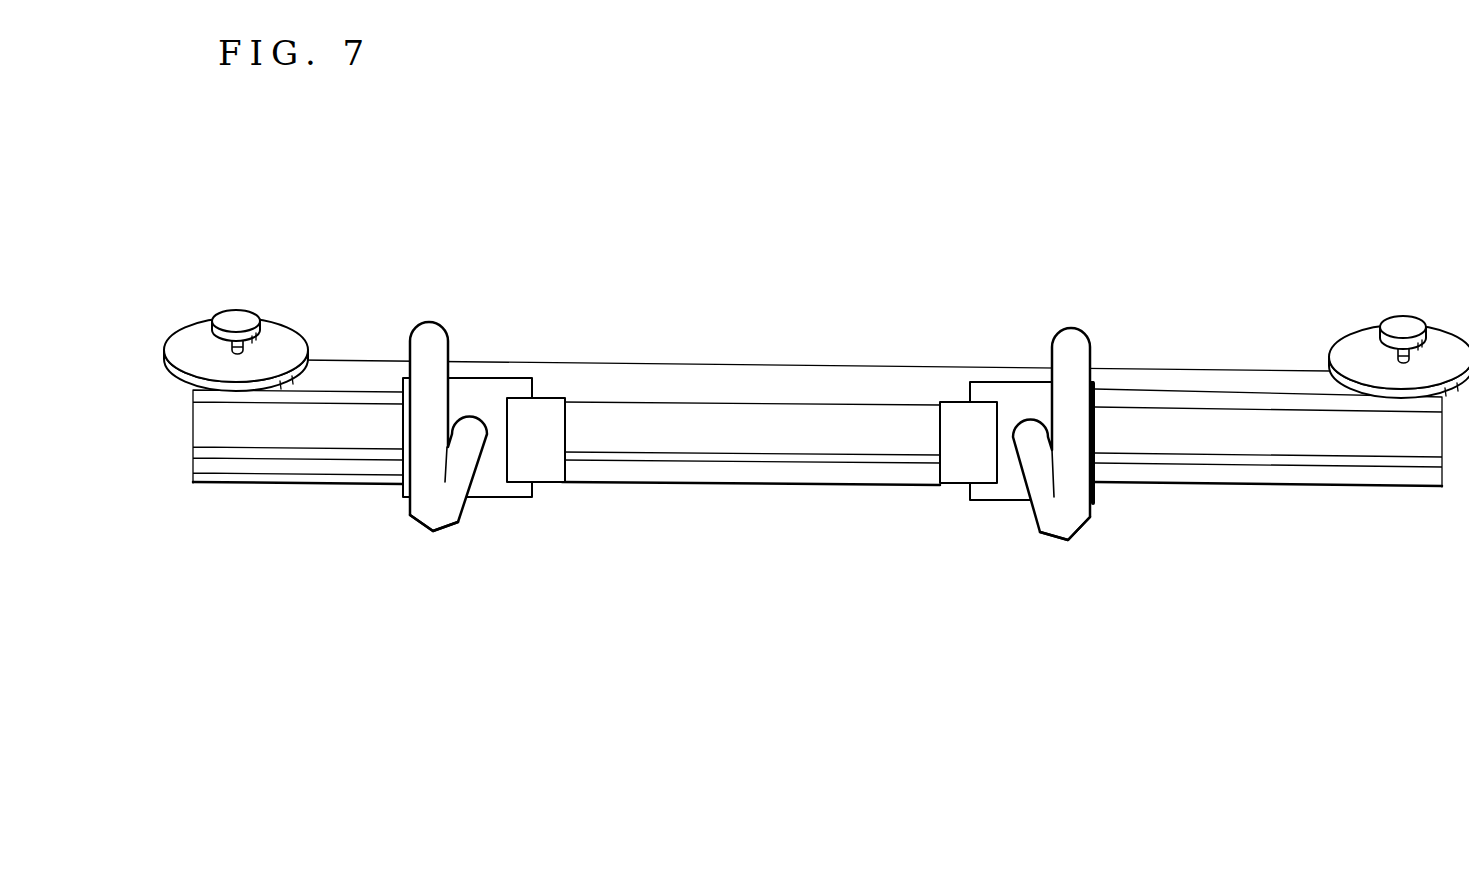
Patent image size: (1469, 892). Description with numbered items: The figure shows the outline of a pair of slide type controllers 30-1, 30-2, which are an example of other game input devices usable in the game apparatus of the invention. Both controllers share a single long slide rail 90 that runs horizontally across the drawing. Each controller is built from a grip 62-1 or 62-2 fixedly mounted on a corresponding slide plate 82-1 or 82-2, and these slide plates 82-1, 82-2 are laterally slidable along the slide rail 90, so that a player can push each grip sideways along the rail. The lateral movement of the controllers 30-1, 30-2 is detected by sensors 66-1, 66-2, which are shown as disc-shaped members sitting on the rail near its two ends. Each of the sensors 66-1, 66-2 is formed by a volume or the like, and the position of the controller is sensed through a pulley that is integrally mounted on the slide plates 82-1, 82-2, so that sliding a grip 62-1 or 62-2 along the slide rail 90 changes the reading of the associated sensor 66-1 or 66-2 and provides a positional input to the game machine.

The slide rail 90 is at (245, 482).
The sensor 66-1 is at (258, 320).
The sensor 66-2 is at (1403, 320).
The grip 62-1 is at (432, 338).
The grip 62-2 is at (1072, 340).
The slide plate 82-1 is at (502, 488).
The slide plate 82-2 is at (988, 493).
The slide type controller 30-1 is at (442, 533).
The slide type controller 30-2 is at (1058, 522).